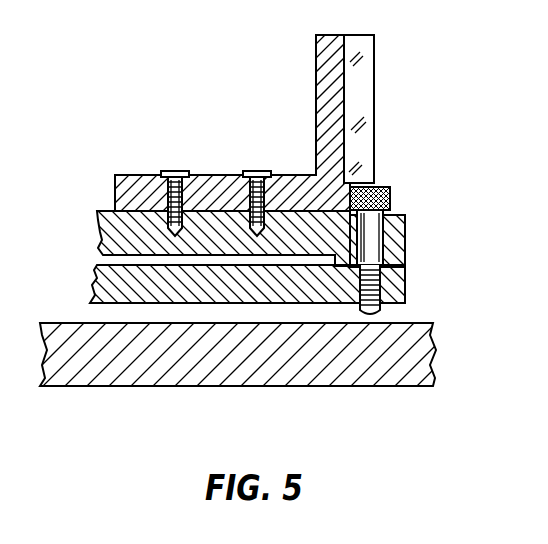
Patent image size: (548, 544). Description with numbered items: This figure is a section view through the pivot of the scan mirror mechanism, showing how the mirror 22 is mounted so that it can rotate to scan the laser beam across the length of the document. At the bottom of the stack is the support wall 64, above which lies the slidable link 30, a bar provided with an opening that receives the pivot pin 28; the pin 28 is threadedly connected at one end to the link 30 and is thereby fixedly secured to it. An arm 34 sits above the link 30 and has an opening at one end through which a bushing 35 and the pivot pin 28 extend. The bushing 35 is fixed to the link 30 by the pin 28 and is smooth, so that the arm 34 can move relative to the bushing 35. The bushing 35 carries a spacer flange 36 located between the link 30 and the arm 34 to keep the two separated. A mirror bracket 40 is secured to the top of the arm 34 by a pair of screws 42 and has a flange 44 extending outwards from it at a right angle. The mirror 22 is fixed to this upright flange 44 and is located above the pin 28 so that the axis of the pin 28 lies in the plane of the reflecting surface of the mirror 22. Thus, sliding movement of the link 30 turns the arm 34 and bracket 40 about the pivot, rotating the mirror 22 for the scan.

The mirror 22 is at (370, 85).
The pivot pin 28 is at (392, 190).
The slidable link 30 is at (100, 283).
The arm 34 is at (100, 228).
The bushing 35 is at (392, 230).
The spacer flange 36 is at (400, 257).
The mirror bracket 40 is at (136, 174).
The screws 42 is at (182, 171).
The flange 44 is at (318, 60).
The support wall 64 is at (437, 388).